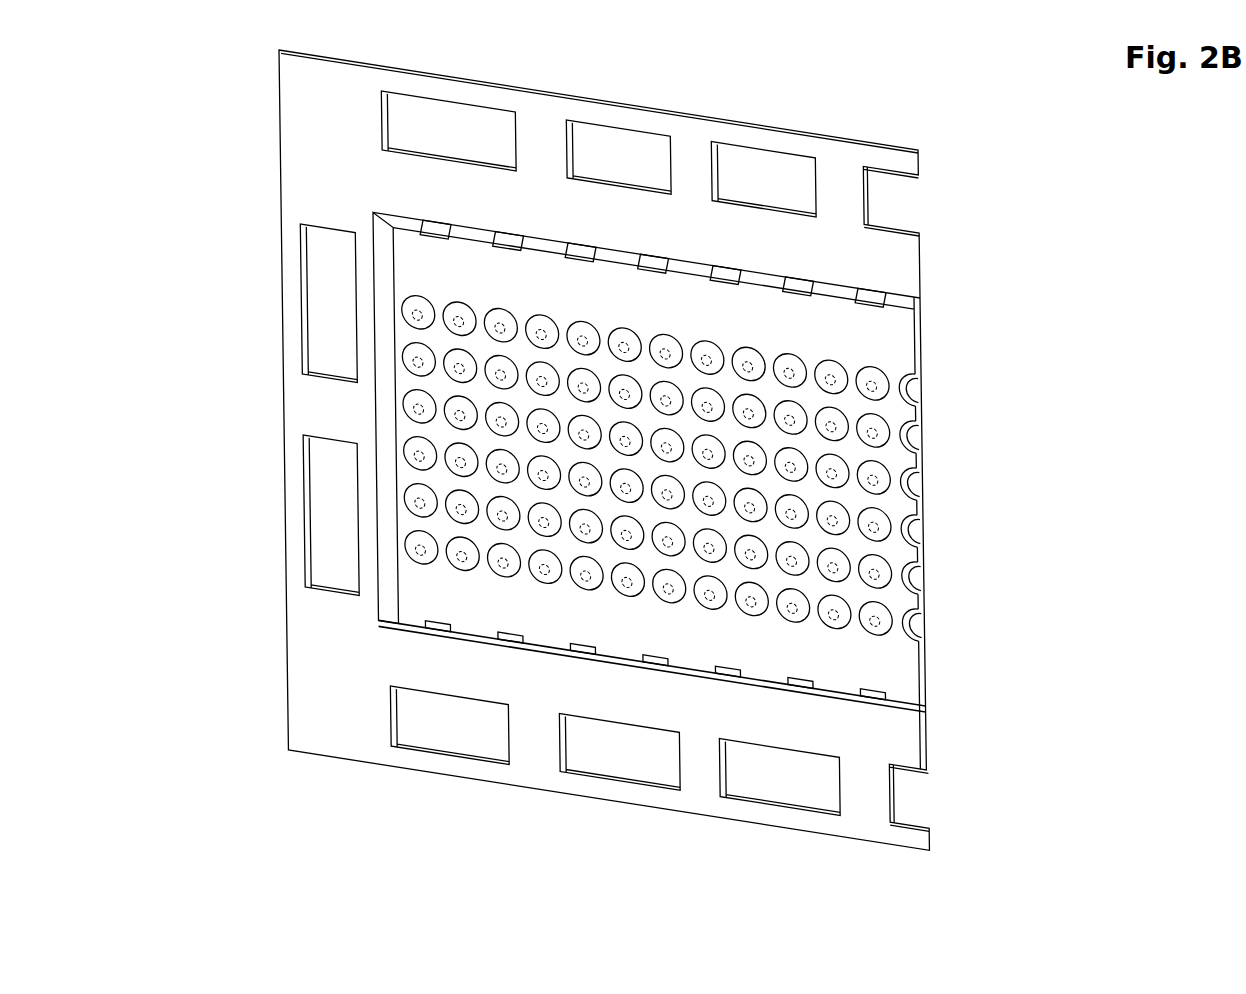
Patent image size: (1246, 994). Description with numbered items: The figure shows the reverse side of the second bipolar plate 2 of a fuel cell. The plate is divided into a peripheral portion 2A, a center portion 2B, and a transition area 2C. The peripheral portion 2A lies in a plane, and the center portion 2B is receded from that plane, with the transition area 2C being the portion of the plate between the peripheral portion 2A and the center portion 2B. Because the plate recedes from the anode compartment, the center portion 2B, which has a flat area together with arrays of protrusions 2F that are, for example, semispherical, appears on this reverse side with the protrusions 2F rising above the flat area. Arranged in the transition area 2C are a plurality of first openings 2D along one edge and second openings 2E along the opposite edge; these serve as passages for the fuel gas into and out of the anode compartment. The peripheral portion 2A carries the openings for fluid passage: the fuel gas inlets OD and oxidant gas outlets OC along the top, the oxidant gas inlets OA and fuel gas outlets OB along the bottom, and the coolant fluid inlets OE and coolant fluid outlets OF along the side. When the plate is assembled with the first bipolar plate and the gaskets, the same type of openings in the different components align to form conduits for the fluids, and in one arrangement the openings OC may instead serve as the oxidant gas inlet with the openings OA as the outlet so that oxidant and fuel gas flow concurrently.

The second bipolar plate 2 is at (918, 300).
The peripheral portion 2A is at (878, 248).
The center portion 2B is at (890, 358).
The transition area 2C is at (391, 247).
The first openings 2D is at (870, 295).
The second openings 2E is at (875, 693).
The protrusions 2F is at (910, 386).
The oxidant gas inlets OA is at (452, 730).
The fuel gas outlets OB is at (748, 775).
The oxidant gas outlets OC is at (451, 138).
The fuel gas inlets OD is at (755, 172).
The coolant fluid inlets OE is at (338, 510).
The coolant fluid outlets OF is at (338, 298).